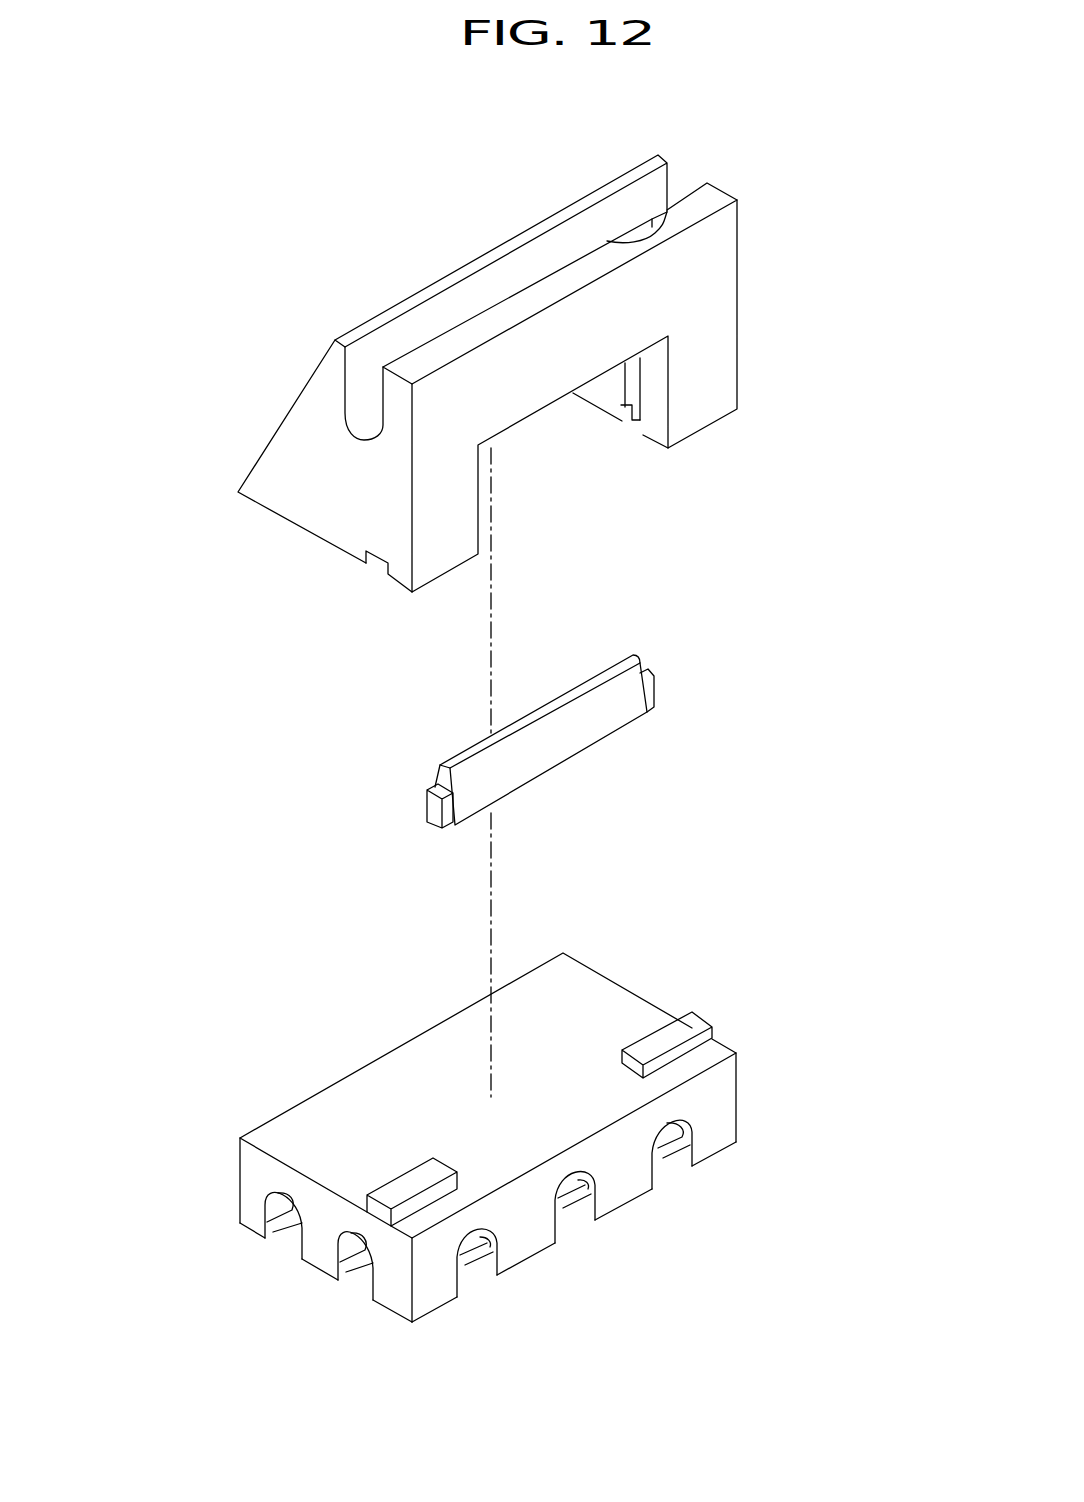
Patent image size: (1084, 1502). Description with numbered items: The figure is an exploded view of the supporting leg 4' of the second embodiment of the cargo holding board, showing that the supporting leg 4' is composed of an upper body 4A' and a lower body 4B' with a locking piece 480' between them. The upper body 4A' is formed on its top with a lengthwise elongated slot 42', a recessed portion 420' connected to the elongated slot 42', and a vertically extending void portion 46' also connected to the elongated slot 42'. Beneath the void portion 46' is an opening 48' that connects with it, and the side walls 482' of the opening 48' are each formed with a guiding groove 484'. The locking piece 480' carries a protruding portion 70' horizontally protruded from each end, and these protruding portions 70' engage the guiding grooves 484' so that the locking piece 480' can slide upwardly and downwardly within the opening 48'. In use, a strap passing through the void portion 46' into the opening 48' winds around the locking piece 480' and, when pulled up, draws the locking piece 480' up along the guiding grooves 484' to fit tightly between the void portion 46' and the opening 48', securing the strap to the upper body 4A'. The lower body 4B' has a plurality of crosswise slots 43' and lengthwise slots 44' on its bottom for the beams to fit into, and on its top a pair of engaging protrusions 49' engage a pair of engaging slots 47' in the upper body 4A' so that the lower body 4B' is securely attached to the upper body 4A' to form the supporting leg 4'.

The supporting leg 4' is at (366, 145).
The upper body 4A' is at (516, 367).
The lower body 4B' is at (545, 1155).
The elongated slot 42' is at (501, 259).
The void portion 46' is at (703, 188).
The recessed portion 420' is at (276, 451).
The engaging slots 47' is at (524, 530).
The opening 48' is at (739, 394).
The side walls 482' is at (611, 460).
The guiding groove 484' is at (729, 389).
The locking piece 480' is at (597, 773).
The protruding portion 70' is at (561, 776).
The engaging protrusions 49' is at (577, 1094).
The crosswise slots 43' is at (584, 1235).
The lengthwise slots 44' is at (314, 1275).